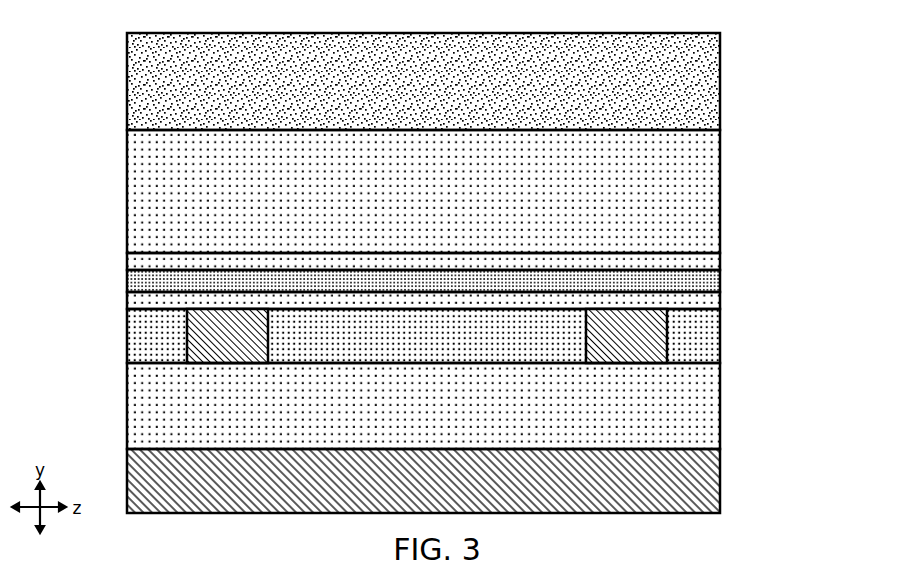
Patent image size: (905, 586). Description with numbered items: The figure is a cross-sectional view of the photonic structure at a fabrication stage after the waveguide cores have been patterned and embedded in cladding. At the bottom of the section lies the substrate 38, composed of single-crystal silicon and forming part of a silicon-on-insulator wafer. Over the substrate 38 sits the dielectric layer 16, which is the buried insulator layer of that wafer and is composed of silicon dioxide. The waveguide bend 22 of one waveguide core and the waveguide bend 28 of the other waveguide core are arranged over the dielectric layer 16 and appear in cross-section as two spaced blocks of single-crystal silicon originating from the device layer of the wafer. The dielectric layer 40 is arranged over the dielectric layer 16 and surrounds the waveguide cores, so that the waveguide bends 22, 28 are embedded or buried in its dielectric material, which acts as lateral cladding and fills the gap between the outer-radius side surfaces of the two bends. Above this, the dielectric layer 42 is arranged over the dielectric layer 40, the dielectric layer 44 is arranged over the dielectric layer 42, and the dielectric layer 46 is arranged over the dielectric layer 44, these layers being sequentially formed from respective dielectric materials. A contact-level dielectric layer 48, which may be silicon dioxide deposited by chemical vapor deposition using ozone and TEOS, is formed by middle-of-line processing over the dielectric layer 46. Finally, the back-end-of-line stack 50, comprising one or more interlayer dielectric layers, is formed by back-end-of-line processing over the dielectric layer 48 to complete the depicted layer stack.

The back-end-of-line stack 50 is at (165, 95).
The dielectric layer 48 is at (165, 182).
The dielectric layer 46 is at (147, 262).
The dielectric layer 44 is at (684, 285).
The dielectric layer 42 is at (148, 305).
The dielectric layer 40 is at (683, 322).
The waveguide bend 22 is at (228, 334).
The waveguide bend 28 is at (627, 329).
The dielectric layer 16 is at (702, 419).
The substrate 38 is at (702, 480).